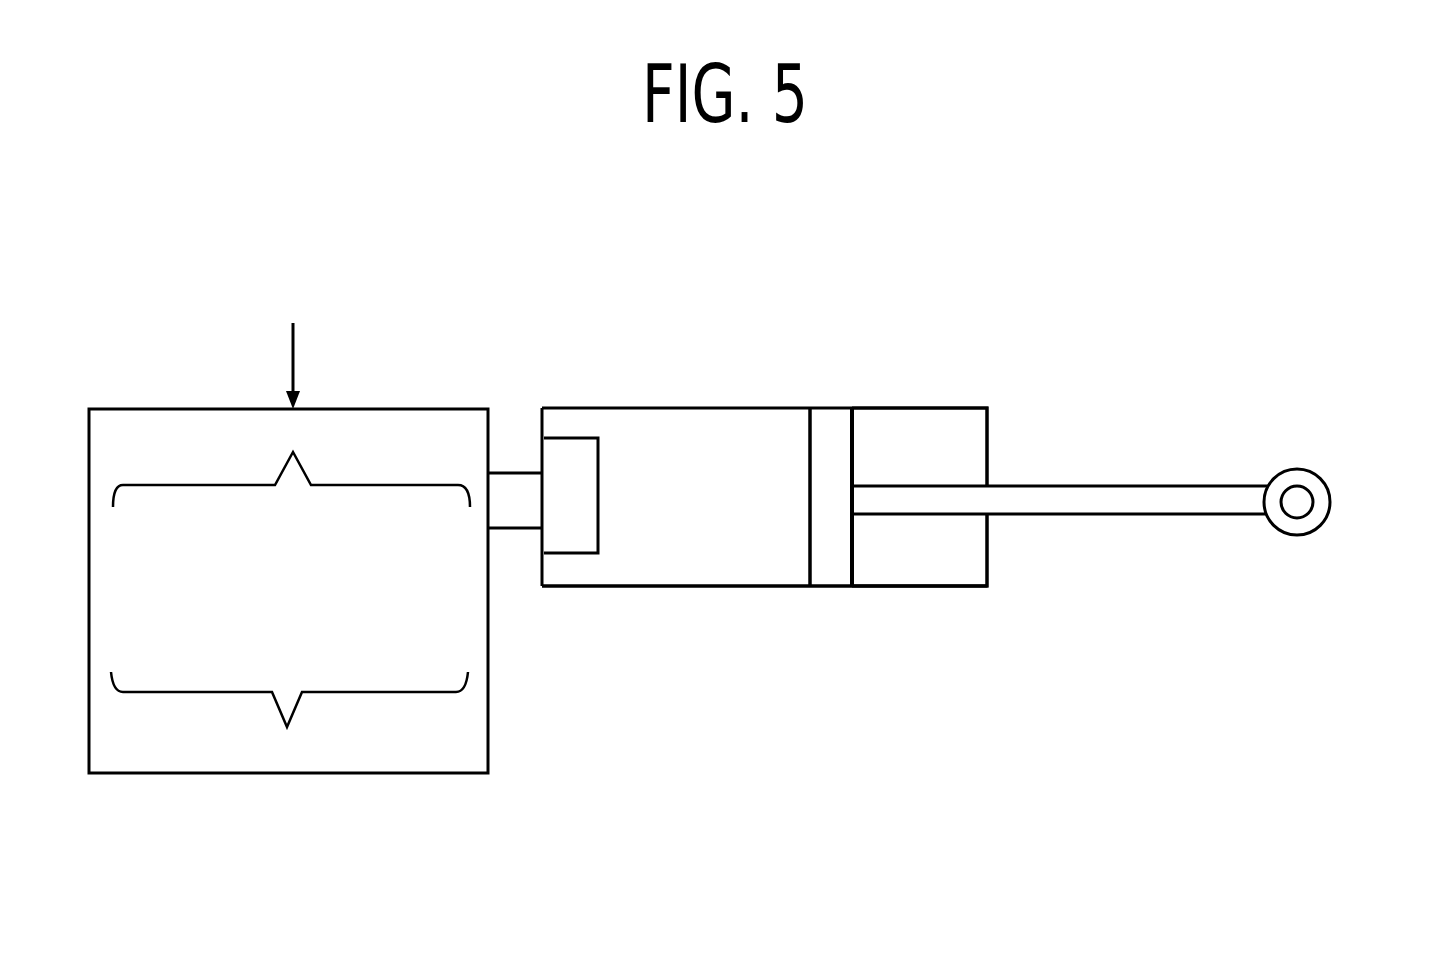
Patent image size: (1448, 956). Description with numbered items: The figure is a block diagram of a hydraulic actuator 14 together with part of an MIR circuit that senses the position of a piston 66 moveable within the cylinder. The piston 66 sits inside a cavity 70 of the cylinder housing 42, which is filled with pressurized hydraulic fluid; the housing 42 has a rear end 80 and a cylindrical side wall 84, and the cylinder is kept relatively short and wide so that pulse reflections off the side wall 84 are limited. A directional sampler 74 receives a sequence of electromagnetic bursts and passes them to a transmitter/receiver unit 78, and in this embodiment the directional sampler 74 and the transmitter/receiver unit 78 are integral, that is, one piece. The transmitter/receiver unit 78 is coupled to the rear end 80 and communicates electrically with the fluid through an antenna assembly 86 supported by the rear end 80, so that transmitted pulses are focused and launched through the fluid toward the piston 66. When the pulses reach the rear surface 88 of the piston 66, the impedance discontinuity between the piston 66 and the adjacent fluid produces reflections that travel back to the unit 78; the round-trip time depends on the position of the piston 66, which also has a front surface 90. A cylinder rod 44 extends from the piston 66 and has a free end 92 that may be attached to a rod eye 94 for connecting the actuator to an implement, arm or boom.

The hydraulic actuator 14 is at (540, 270).
The directional sampler 74 is at (390, 409).
The transmitter/receiver unit 78 is at (518, 473).
The rear end 80 is at (542, 420).
The cavity 70 is at (722, 410).
The antenna assembly 86 is at (583, 436).
The cylinder housing 42 is at (976, 397).
The piston 66 is at (823, 577).
The rear surface 88 is at (808, 511).
The front surface 90 is at (855, 545).
The cylindrical side wall 84 is at (640, 588).
The free end 92 is at (1215, 486).
The cylinder rod 44 is at (1178, 516).
The rod eye 94 is at (1327, 512).